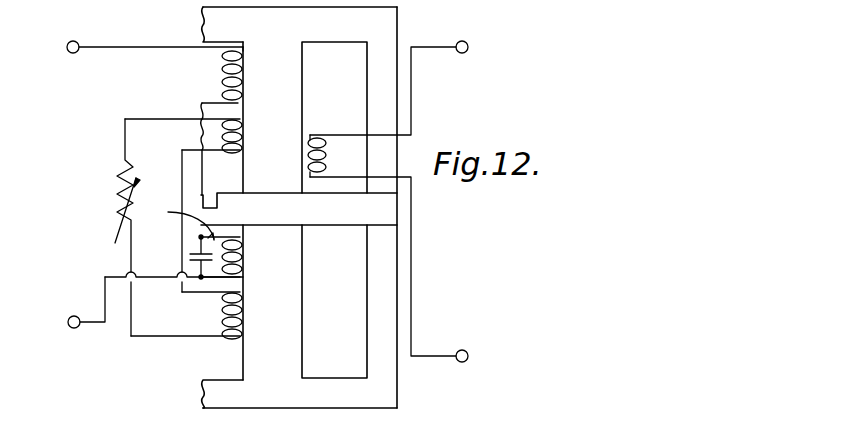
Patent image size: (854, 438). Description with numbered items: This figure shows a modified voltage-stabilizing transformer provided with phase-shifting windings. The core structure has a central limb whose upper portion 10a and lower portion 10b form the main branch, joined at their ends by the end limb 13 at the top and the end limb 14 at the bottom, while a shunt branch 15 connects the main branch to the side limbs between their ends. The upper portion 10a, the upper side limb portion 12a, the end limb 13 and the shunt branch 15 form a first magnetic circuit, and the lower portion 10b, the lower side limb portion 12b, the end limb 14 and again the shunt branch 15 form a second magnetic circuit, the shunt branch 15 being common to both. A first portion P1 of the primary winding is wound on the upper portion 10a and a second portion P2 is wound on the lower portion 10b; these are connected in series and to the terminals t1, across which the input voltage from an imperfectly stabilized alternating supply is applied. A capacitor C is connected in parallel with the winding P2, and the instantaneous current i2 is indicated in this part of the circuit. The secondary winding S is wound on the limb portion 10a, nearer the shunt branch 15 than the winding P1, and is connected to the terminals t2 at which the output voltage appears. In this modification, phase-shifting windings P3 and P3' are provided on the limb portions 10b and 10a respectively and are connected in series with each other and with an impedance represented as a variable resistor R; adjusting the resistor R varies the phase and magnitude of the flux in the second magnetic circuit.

The end limb 13 is at (299, 24).
The end limb 14 is at (299, 394).
The shunt branch 15 is at (299, 209).
The upper portion of central limb 10a is at (245, 118).
The lower portion of central limb 10b is at (265, 302).
The upper portion of side limb 12a is at (392, 97).
The lower portion of side limb 12b is at (392, 317).
The primary terminals t1 is at (150, 171).
The secondary terminals t2 is at (397, 189).
The first portion of primary winding P1 is at (240, 79).
The phase-shifting winding P3' is at (199, 135).
The second portion of primary winding P2 is at (243, 258).
The phase-shifting winding P3 is at (205, 315).
The secondary winding S is at (323, 156).
The variable resistor R is at (115, 227).
The capacitor C is at (190, 252).
The current i2 is at (182, 215).